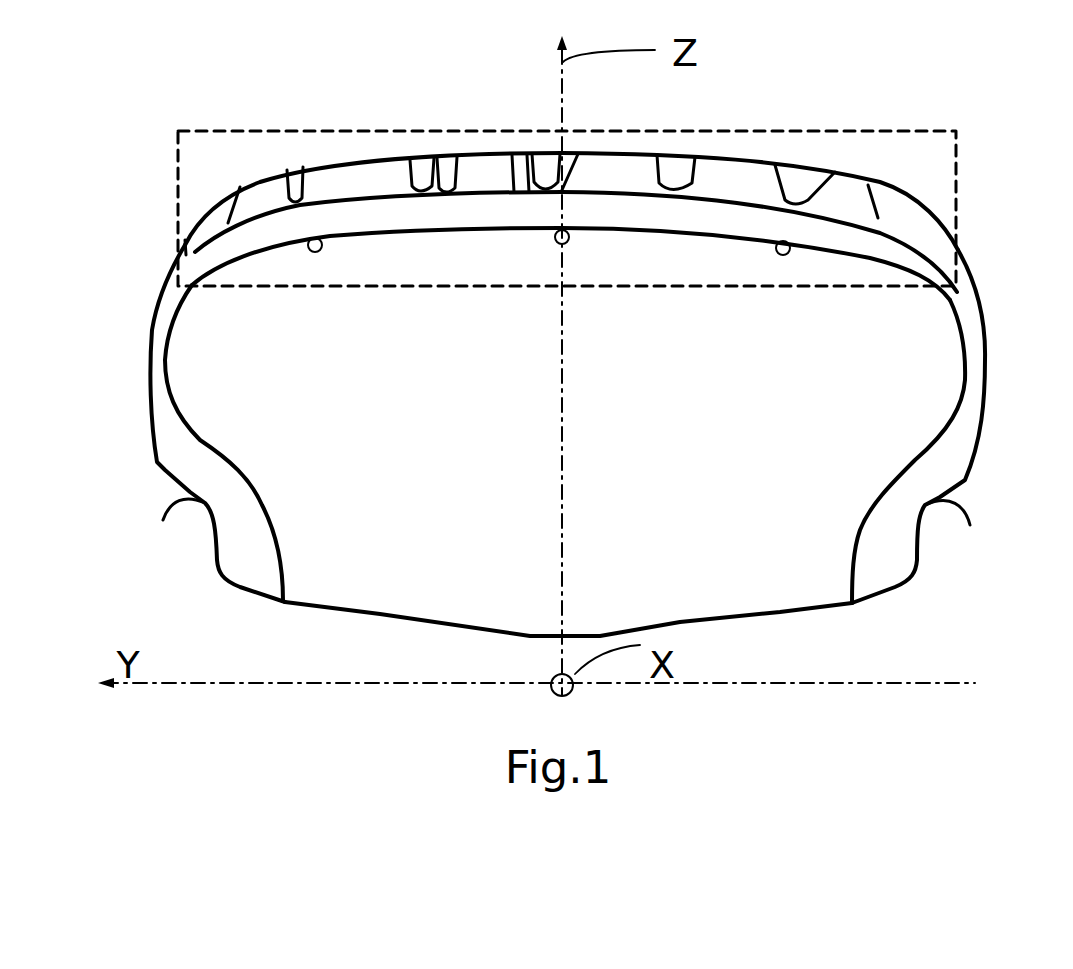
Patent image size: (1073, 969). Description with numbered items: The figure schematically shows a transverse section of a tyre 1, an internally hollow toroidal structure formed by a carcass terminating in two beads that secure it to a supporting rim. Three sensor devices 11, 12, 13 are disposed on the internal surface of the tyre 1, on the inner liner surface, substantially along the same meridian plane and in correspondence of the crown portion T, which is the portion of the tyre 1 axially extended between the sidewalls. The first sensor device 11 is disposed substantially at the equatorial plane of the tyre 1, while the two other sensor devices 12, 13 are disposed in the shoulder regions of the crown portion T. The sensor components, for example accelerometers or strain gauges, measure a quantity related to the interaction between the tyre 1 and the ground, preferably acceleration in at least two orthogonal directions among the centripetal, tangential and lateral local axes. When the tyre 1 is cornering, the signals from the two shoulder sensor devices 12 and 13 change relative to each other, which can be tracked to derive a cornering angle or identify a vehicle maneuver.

The tyre 1 is at (132, 346).
The first sensor device 11 is at (556, 232).
The second sensor device 12 is at (312, 238).
The third sensor device 13 is at (786, 242).
The crown portion T is at (959, 203).